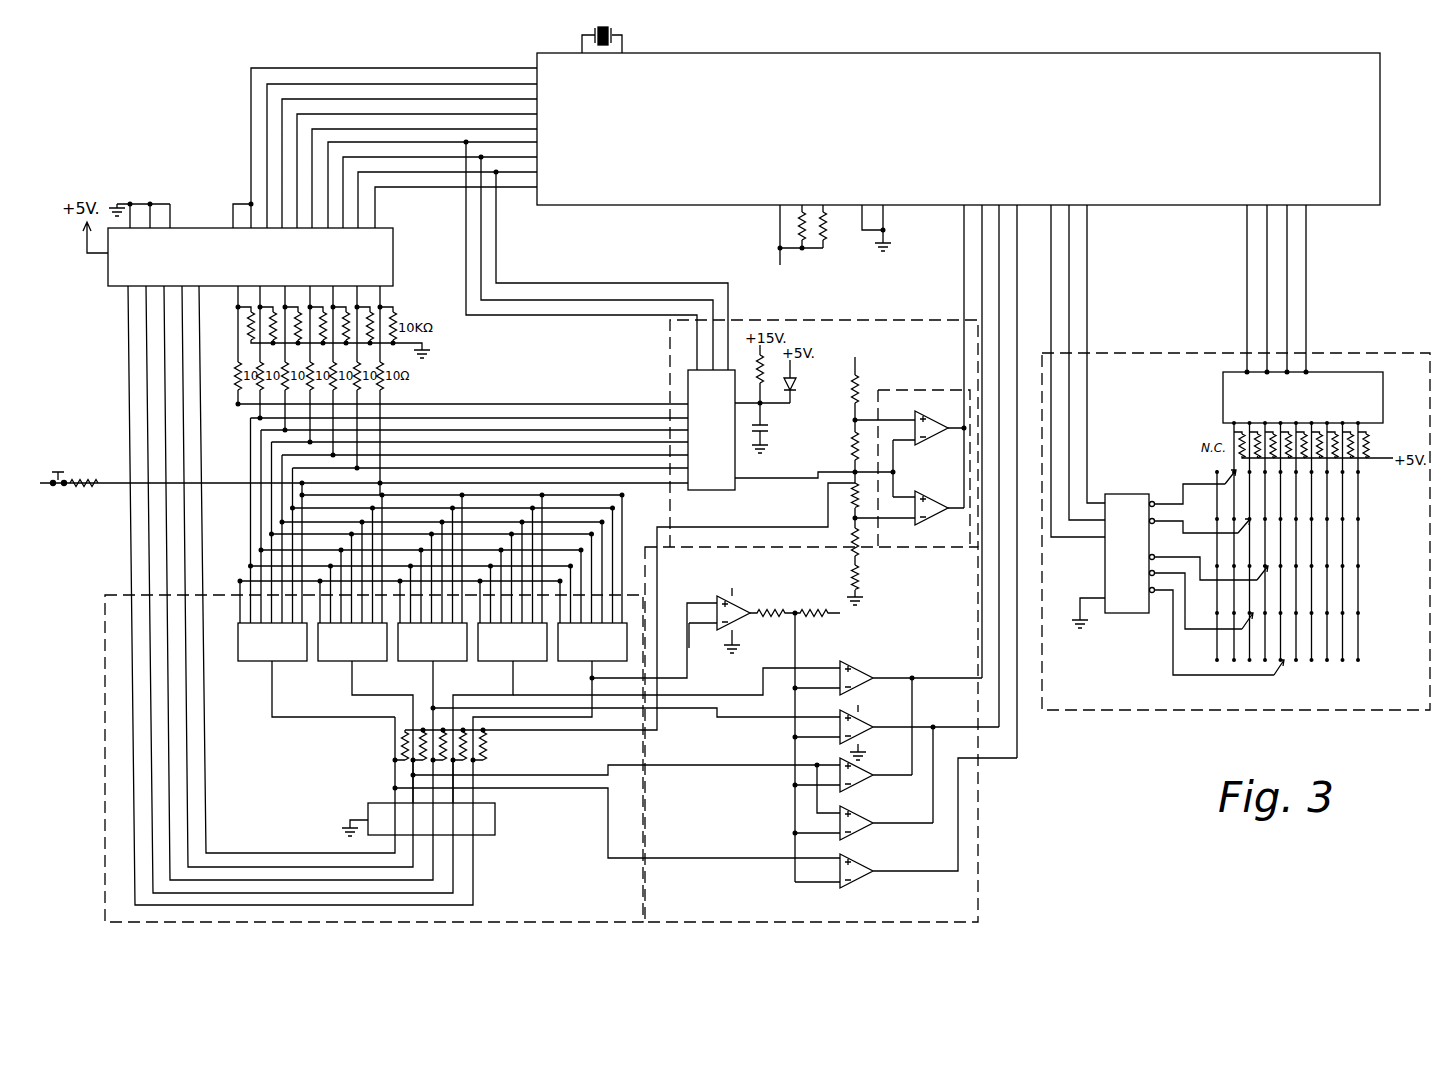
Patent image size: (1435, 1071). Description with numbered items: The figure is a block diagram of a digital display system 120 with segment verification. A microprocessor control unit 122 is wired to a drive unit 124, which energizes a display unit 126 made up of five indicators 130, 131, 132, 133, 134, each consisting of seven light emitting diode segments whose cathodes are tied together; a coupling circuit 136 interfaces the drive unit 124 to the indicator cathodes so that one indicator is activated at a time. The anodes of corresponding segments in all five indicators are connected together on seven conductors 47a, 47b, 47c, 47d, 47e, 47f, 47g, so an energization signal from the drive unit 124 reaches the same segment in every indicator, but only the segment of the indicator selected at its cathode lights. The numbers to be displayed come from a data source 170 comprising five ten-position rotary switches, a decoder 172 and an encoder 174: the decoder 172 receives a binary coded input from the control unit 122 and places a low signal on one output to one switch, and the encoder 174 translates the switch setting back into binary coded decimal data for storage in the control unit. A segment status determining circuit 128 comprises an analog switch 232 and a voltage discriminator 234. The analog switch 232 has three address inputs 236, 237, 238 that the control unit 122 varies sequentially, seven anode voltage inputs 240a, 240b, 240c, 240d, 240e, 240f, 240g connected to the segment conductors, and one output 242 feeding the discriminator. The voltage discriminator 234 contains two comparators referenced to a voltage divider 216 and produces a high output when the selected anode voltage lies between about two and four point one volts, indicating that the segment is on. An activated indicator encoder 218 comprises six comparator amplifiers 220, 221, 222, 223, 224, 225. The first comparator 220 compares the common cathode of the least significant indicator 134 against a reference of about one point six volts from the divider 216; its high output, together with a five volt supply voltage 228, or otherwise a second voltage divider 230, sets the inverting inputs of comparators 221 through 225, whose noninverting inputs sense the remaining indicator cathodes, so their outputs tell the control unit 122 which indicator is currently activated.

The digital display system 120 is at (1071, 790).
The control unit 122 is at (1094, 112).
The drive unit 124 is at (393, 262).
The display unit 126 is at (105, 666).
The segment status determining circuit 128 is at (810, 320).
The indicator 130 is at (262, 663).
The indicator 131 is at (342, 663).
The indicator 132 is at (422, 663).
The indicator 133 is at (500, 663).
The least significant indicator 134 is at (582, 663).
The coupling circuit 136 is at (496, 822).
The keyboard circuit 170 is at (1427, 728).
The decoder 172 is at (1120, 613).
The encoder 174 is at (1383, 405).
The voltage divider 216 is at (885, 376).
The activated indicator encoder 218 is at (980, 816).
The first comparator 220 is at (750, 614).
The comparator 221 is at (862, 672).
The comparator 222 is at (872, 735).
The comparator 223 is at (864, 786).
The comparator 224 is at (864, 834).
The comparator 225 is at (864, 881).
The supply voltage 228 is at (880, 619).
The second voltage divider 230 is at (806, 630).
The analog switch 232 is at (733, 490).
The voltage discriminator 234 is at (952, 390).
The address input 236 is at (606, 315).
The address input 237 is at (564, 300).
The address input 238 is at (520, 283).
The anode voltage input 240a is at (434, 404).
The anode voltage input 240b is at (486, 418).
The anode voltage input 240c is at (517, 430).
The anode voltage input 240d is at (542, 442).
The anode voltage input 240e is at (578, 455).
The anode voltage input 240f is at (610, 468).
The anode voltage input 240g is at (652, 485).
The output 242 is at (782, 478).
The segment line 47a is at (547, 582).
The segment line 47b is at (547, 568).
The segment line 47c is at (551, 554).
The segment line 47d is at (551, 540).
The segment line 47e is at (551, 526).
The segment line 47f is at (551, 512).
The segment line 47g is at (559, 499).